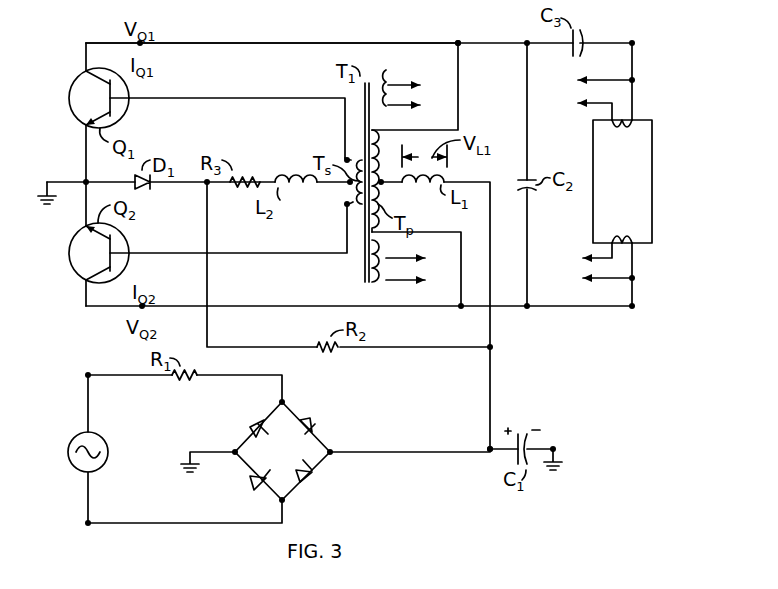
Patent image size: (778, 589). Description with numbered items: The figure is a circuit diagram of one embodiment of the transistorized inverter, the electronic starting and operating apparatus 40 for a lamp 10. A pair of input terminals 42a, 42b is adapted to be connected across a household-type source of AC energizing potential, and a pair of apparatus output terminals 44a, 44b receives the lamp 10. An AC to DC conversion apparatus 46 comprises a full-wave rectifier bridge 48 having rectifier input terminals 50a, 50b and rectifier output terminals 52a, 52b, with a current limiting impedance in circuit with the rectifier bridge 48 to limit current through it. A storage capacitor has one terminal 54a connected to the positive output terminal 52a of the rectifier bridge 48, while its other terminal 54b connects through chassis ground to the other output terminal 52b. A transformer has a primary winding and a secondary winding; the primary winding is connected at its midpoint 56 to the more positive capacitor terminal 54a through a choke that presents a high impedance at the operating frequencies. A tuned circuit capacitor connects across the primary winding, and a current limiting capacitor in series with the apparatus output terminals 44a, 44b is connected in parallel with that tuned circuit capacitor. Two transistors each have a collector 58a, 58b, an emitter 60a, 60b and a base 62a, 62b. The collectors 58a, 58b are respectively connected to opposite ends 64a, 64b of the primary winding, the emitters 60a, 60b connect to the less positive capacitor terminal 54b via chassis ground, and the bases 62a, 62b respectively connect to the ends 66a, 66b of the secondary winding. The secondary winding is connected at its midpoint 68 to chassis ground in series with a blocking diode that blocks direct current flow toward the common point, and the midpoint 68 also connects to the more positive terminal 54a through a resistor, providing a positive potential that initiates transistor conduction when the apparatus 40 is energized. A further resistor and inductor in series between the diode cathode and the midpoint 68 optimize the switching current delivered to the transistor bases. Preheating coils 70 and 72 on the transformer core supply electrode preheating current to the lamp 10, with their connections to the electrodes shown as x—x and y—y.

The lamp 10 is at (681, 188).
The apparatus 40 is at (293, 29).
The input terminal 42a is at (88, 374).
The input terminal 42b is at (88, 526).
The apparatus output terminal 44a is at (632, 40).
The apparatus output terminal 44b is at (632, 310).
The AC to DC conversion apparatus 46 is at (311, 443).
The full-wave rectifier bridge 48 is at (292, 459).
The rectifier input terminal 50a is at (284, 400).
The rectifier input terminal 50b is at (280, 502).
The rectifier output terminal 52a is at (332, 450).
The rectifier output terminal 52b is at (232, 450).
The storage capacitor terminal 54a is at (488, 446).
The storage capacitor terminal 54b is at (555, 446).
The midpoint of primary winding 56 is at (383, 184).
The collector 58a is at (93, 85).
The collector 58b is at (92, 273).
The emitter 60a is at (92, 113).
The emitter 60b is at (92, 242).
The base 62a is at (116, 106).
The base 62b is at (116, 248).
The end of primary winding 64a is at (460, 40).
The end of primary winding 64b is at (460, 312).
The end of secondary winding 66a is at (344, 154).
The end of secondary winding 66b is at (344, 210).
The midpoint of secondary winding 68 is at (348, 188).
The preheating coil 70 is at (376, 84).
The preheating coil 72 is at (388, 256).